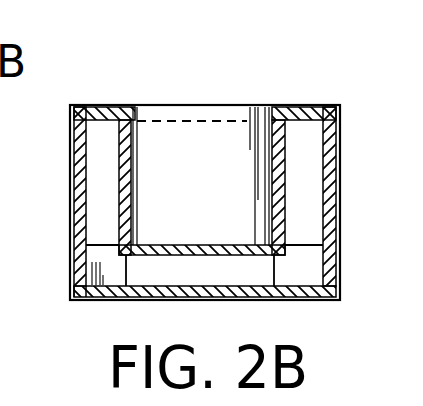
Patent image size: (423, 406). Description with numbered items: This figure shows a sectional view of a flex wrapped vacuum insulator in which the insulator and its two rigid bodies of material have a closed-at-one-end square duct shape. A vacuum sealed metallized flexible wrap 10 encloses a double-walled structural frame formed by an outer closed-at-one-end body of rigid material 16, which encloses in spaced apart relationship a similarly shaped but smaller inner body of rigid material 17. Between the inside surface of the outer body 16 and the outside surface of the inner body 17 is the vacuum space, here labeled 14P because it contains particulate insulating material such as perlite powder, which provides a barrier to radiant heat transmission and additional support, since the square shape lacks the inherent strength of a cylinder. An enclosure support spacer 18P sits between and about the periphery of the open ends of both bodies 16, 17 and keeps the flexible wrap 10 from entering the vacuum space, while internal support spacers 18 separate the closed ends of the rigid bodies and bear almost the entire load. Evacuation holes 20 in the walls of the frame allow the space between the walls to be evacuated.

The vacuum sealed metallized flexible wrap 10 is at (70, 112).
The outer closed at one end body of rigid material 16 is at (70, 158).
The inner body of rigid material 17 is at (288, 157).
The enclosure support spacer 18P is at (302, 107).
The vacuum space containing particulate insulating material 14P is at (97, 208).
The internal support spacer 18 is at (98, 300).
The evacuation hole 20 is at (225, 322).